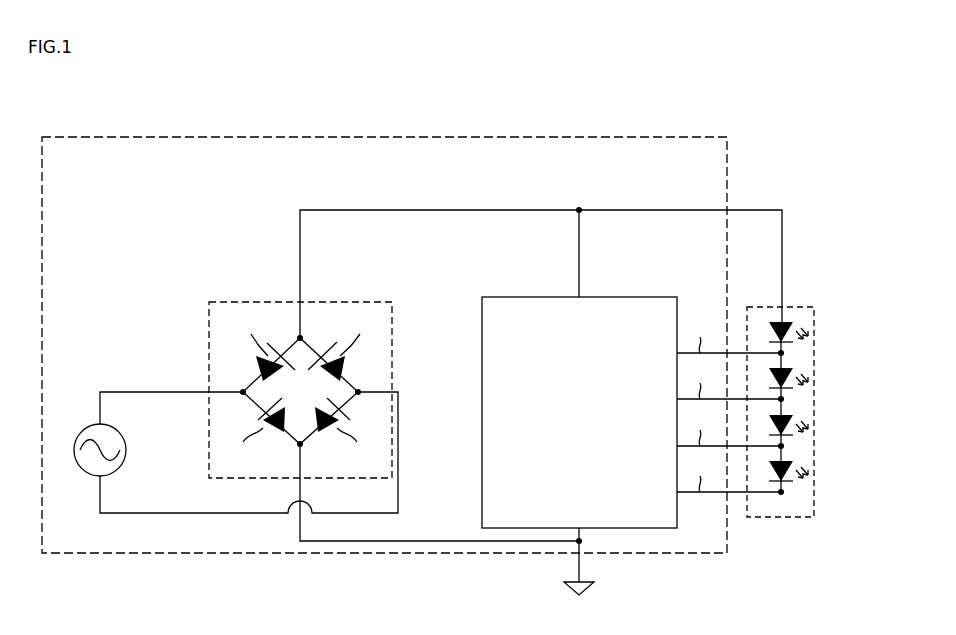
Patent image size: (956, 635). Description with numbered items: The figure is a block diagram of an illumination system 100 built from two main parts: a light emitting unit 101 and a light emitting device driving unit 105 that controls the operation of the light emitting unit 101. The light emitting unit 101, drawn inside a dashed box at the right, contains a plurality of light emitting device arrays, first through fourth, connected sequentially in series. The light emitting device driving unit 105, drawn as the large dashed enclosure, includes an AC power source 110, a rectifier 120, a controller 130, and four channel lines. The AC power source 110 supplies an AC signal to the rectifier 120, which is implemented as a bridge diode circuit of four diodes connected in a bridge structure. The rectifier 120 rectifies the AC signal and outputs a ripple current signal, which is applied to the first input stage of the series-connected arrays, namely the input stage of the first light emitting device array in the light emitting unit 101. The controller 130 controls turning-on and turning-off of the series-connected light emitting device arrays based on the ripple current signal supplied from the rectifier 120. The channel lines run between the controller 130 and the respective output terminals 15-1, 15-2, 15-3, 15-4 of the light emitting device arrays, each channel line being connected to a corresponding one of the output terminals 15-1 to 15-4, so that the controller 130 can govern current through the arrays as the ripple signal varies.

The illumination system 100 is at (770, 135).
The light emitting device driving unit 105 is at (418, 137).
The AC power source 110 is at (87, 425).
The rectifier 120 is at (241, 302).
The controller 130 is at (531, 297).
The light emitting unit 101 is at (797, 307).
The output terminal 15-1 is at (783, 354).
The output terminal 15-2 is at (783, 400).
The output terminal 15-3 is at (783, 447).
The output terminal 15-4 is at (783, 493).